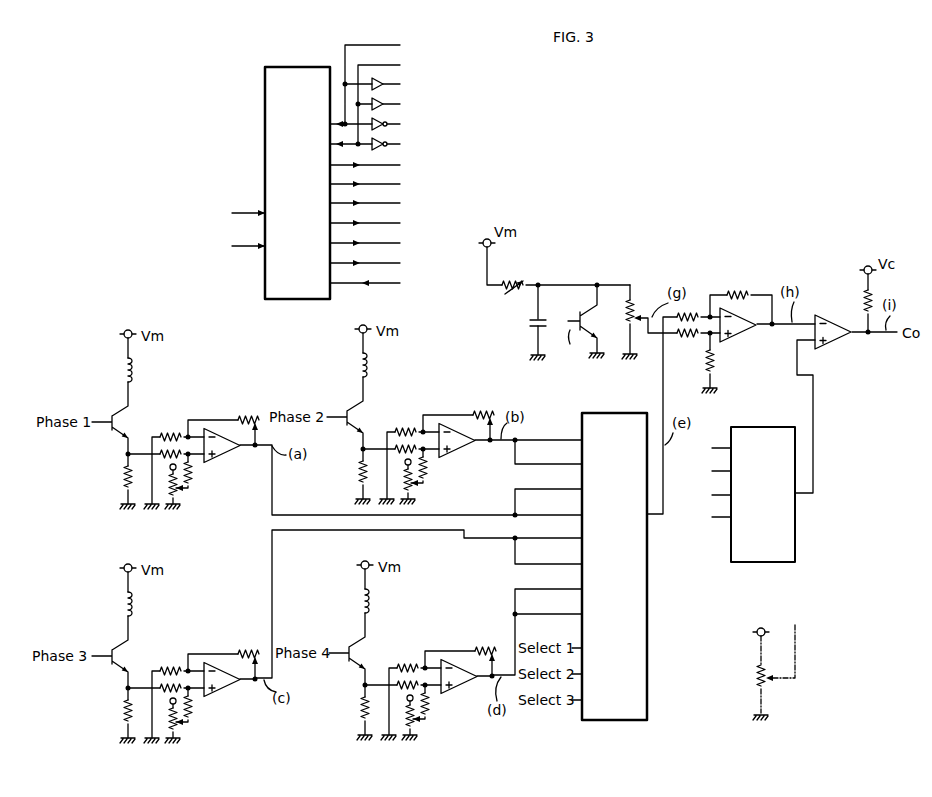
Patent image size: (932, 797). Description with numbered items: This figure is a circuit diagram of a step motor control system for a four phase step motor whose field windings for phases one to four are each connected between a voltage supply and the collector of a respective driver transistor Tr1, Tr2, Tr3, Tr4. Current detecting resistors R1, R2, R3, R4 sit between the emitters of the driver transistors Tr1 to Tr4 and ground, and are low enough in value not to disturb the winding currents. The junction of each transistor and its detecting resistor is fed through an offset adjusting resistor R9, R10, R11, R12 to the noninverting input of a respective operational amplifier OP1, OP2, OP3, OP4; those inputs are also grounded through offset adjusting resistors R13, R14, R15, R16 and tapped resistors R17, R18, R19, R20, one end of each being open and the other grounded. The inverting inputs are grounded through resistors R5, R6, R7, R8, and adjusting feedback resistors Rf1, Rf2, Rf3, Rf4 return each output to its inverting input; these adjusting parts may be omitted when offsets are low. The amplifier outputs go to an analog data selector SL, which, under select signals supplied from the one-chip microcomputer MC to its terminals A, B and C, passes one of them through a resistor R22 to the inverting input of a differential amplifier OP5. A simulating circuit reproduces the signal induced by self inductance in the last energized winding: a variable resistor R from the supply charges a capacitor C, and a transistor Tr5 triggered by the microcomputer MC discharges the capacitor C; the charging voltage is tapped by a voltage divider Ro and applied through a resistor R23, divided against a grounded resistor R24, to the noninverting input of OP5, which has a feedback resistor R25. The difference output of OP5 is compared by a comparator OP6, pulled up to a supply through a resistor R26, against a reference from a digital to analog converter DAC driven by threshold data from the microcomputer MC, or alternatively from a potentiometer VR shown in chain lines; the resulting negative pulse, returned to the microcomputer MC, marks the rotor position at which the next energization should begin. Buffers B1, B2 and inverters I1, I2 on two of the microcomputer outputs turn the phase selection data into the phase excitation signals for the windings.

The one-chip microcomputer MC is at (264, 90).
The buffer B1 is at (387, 78).
The buffer B2 is at (387, 98).
The inverter I1 is at (386, 118).
The inverter I2 is at (386, 138).
The driver transistor Tr1 is at (105, 418).
The driver transistor Tr2 is at (340, 413).
The driver transistor Tr3 is at (105, 652).
The driver transistor Tr4 is at (342, 649).
The transistor Tr5 is at (578, 310).
The current detecting resistor R1 is at (109, 481).
The current detecting resistor R2 is at (346, 476).
The current detecting resistor R3 is at (109, 715).
The current detecting resistor R4 is at (346, 712).
The resistor R5 is at (176, 415).
The resistor R6 is at (412, 410).
The resistor R7 is at (179, 650).
The resistor R8 is at (413, 647).
The offset adjusting resistor R9 is at (160, 435).
The offset adjusting resistor R10 is at (395, 429).
The offset adjusting resistor R11 is at (160, 667).
The offset adjusting resistor R12 is at (396, 664).
The offset adjusting resistor R13 is at (203, 484).
The offset adjusting resistor R14 is at (440, 471).
The offset adjusting resistor R15 is at (207, 715).
The offset adjusting resistor R16 is at (436, 716).
The offset adjusting resistor R17 is at (166, 498).
The offset adjusting resistor R18 is at (424, 487).
The offset adjusting resistor R19 is at (189, 730).
The offset adjusting resistor R20 is at (405, 729).
The adjusting feedback resistor Rf1 is at (252, 414).
The adjusting feedback resistor Rf2 is at (485, 409).
The adjusting feedback resistor Rf3 is at (242, 646).
The adjusting feedback resistor Rf4 is at (481, 641).
The operational amplifier OP1 is at (229, 460).
The operational amplifier OP2 is at (466, 453).
The operational amplifier OP3 is at (235, 694).
The operational amplifier OP4 is at (468, 699).
The differential amplifier OP5 is at (742, 332).
The comparator OP6 is at (842, 344).
The variable resistor R is at (512, 278).
The capacitor C is at (528, 322).
The voltage divider Ro is at (634, 300).
The resistor R22 is at (689, 313).
The resistor R23 is at (687, 336).
The resistor R24 is at (718, 364).
The feedback resistor R25 is at (740, 293).
The pull-up resistor R26 is at (865, 302).
The analog data selector SL is at (618, 412).
The digital to analog converter DAC is at (796, 556).
The potentiometer VR is at (756, 686).